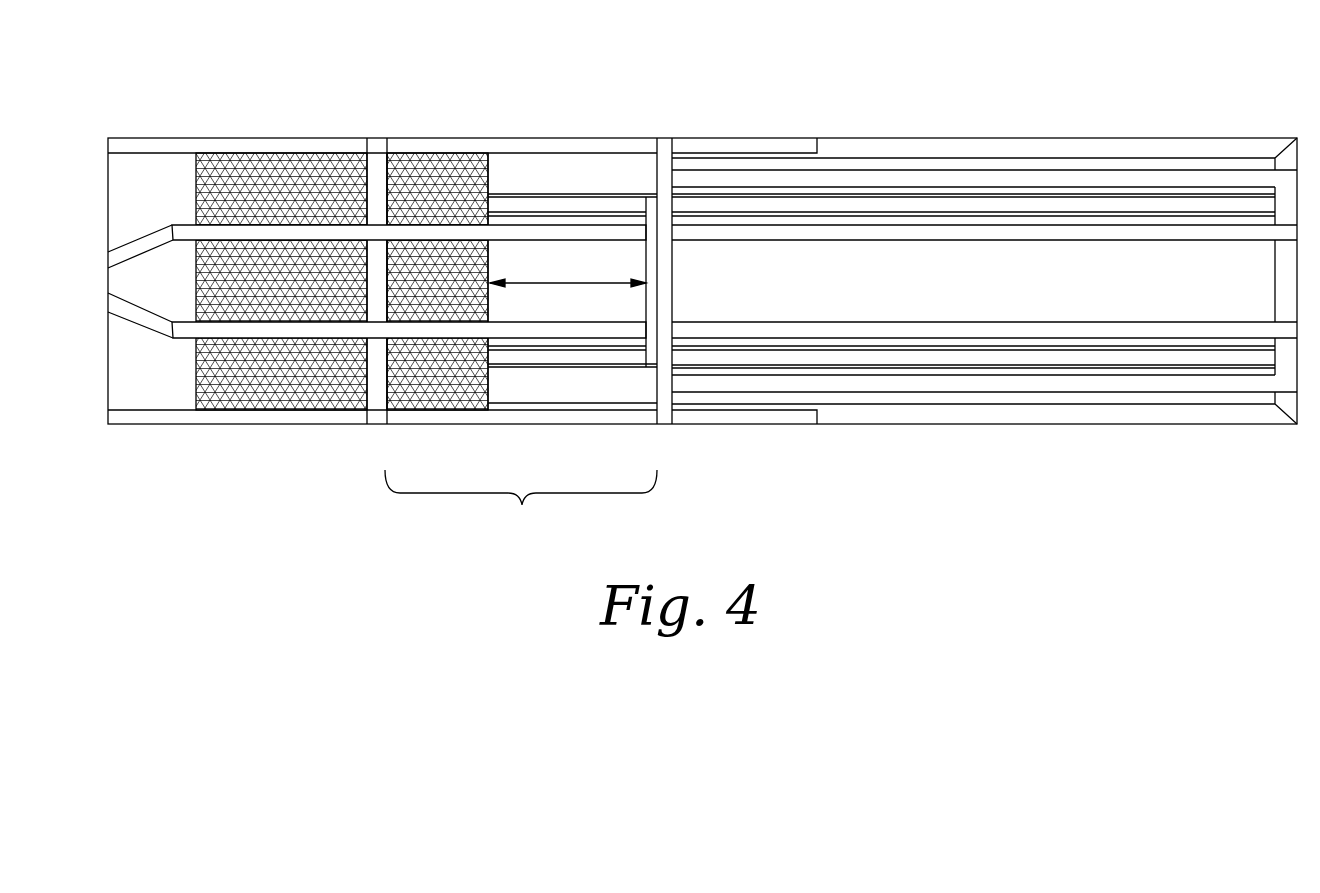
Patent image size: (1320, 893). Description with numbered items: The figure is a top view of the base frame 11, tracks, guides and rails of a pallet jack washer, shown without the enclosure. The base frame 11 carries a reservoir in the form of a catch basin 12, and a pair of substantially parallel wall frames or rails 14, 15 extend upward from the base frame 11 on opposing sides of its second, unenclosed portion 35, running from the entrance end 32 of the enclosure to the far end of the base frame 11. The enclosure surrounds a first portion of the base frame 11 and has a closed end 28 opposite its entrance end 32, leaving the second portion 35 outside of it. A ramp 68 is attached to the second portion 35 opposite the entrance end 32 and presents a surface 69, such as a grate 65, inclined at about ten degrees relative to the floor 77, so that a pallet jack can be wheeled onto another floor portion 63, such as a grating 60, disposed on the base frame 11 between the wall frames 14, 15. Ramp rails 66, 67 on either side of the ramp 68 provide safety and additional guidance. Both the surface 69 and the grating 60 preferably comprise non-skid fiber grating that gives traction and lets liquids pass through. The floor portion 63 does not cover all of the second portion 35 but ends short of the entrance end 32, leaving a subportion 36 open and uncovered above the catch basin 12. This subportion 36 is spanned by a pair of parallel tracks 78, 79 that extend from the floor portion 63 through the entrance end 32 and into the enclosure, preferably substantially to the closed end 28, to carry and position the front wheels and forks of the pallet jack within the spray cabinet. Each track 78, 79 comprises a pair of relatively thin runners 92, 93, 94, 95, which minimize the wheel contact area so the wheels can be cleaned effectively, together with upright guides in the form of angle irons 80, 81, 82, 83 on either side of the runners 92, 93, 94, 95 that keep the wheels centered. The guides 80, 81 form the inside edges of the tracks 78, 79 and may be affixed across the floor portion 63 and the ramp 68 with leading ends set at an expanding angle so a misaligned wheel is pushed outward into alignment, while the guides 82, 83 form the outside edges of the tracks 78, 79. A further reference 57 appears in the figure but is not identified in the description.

The base frame 11 is at (870, 138).
The catch basin 12 is at (792, 294).
The wall frame or rail 14 is at (610, 421).
The rail 15 is at (612, 138).
The closed end 28 is at (1298, 363).
The entrance end 32 is at (653, 183).
The second portion 35 is at (522, 503).
The subportion 36 is at (567, 283).
The filter edge 57 is at (490, 182).
The grating 60 is at (477, 177).
The floor portion 63 is at (418, 177).
The grate 65 is at (233, 173).
The ramp rail 66 is at (295, 424).
The ramp rail 67 is at (287, 153).
The ramp 68 is at (222, 393).
The surface 69 is at (356, 158).
The floor 77 is at (760, 552).
The track 78 is at (1182, 195).
The track 79 is at (563, 365).
The upright guide 80 is at (1103, 225).
The upright guide 81 is at (1080, 337).
The upright guide 82 is at (1062, 187).
The upright guide 83 is at (1040, 377).
The runner 92 is at (1000, 193).
The runner 93 is at (957, 217).
The runner 94 is at (883, 348).
The runner 95 is at (910, 365).